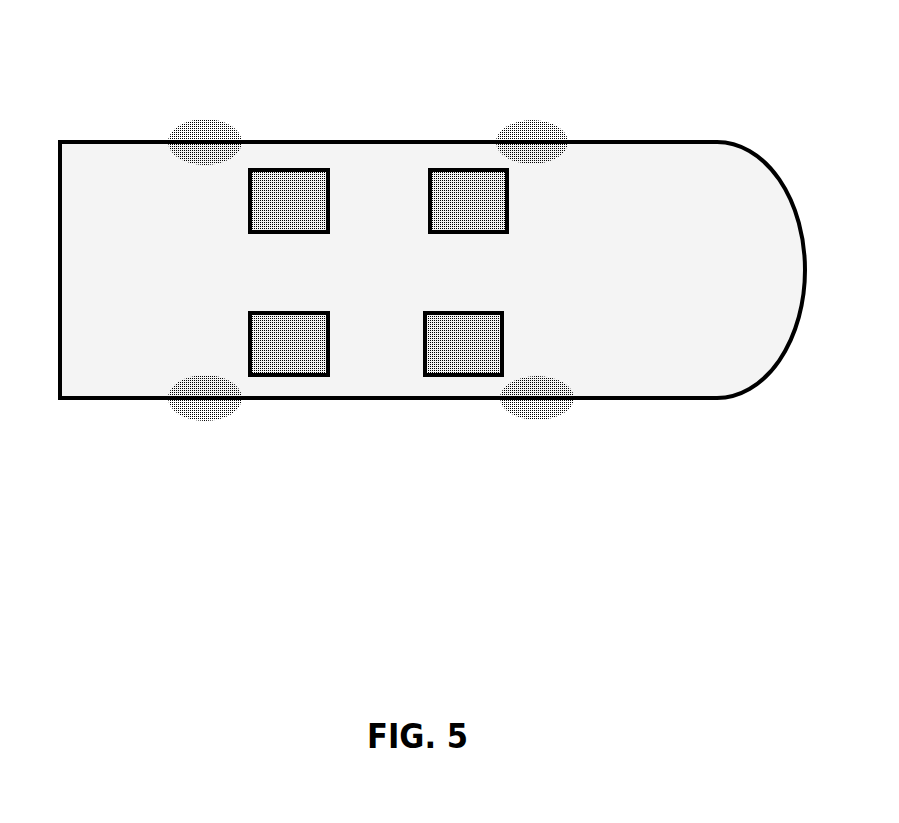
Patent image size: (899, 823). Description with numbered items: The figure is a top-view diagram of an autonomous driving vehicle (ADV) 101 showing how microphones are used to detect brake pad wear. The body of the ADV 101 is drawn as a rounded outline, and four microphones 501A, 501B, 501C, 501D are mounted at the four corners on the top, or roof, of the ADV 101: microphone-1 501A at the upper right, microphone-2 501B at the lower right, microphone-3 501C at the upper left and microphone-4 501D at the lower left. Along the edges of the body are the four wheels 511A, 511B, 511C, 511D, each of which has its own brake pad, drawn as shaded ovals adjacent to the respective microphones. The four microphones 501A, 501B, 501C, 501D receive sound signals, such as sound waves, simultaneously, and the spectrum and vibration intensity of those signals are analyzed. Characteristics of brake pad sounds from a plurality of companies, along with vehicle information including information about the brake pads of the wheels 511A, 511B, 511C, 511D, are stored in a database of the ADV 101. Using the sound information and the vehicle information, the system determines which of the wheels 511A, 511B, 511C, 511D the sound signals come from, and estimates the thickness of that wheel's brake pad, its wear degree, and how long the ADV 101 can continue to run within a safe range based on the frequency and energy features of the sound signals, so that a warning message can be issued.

The autonomous driving vehicle 101 is at (747, 213).
The microphone-1 501A is at (466, 170).
The microphone-2 501B is at (462, 367).
The microphone-3 501C is at (284, 170).
The microphone-4 501D is at (297, 352).
The wheel 511A is at (543, 143).
The wheel 511B is at (543, 397).
The wheel 511C is at (175, 142).
The wheel 511D is at (177, 405).